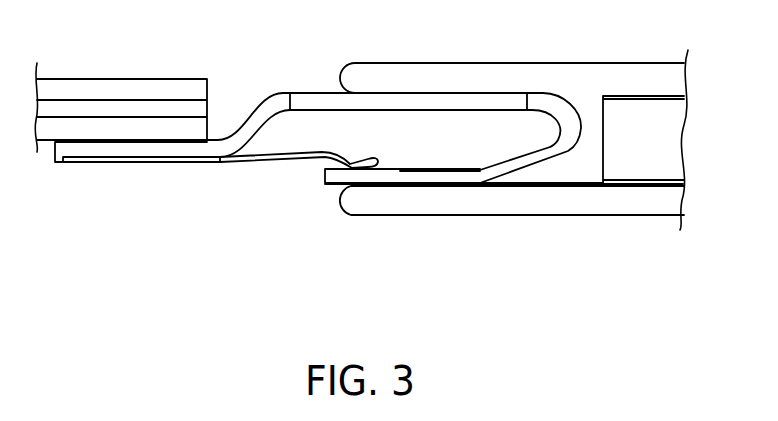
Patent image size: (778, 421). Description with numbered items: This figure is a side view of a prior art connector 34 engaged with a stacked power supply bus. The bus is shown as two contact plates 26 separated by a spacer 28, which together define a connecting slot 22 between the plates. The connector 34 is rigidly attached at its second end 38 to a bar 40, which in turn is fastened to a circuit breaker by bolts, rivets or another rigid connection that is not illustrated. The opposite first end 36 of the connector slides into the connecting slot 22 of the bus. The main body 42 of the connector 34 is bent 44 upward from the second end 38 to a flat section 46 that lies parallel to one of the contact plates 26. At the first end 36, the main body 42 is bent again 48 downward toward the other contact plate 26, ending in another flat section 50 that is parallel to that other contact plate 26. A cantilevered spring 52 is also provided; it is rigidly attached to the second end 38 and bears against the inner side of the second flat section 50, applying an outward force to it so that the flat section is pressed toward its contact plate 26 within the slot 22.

The connecting slot 22 is at (510, 136).
The contact plates 26 is at (373, 72).
The spacer 28 is at (684, 132).
The prior art connector 34 is at (405, 127).
The first end 36 is at (562, 177).
The second end 38 is at (216, 182).
The bar 40 is at (120, 78).
The main body 42 is at (318, 95).
The bend 44 is at (246, 120).
The flat section 46 is at (428, 98).
The second bend 48 is at (603, 137).
The second flat section 50 is at (452, 177).
The cantilevered spring 52 is at (280, 162).